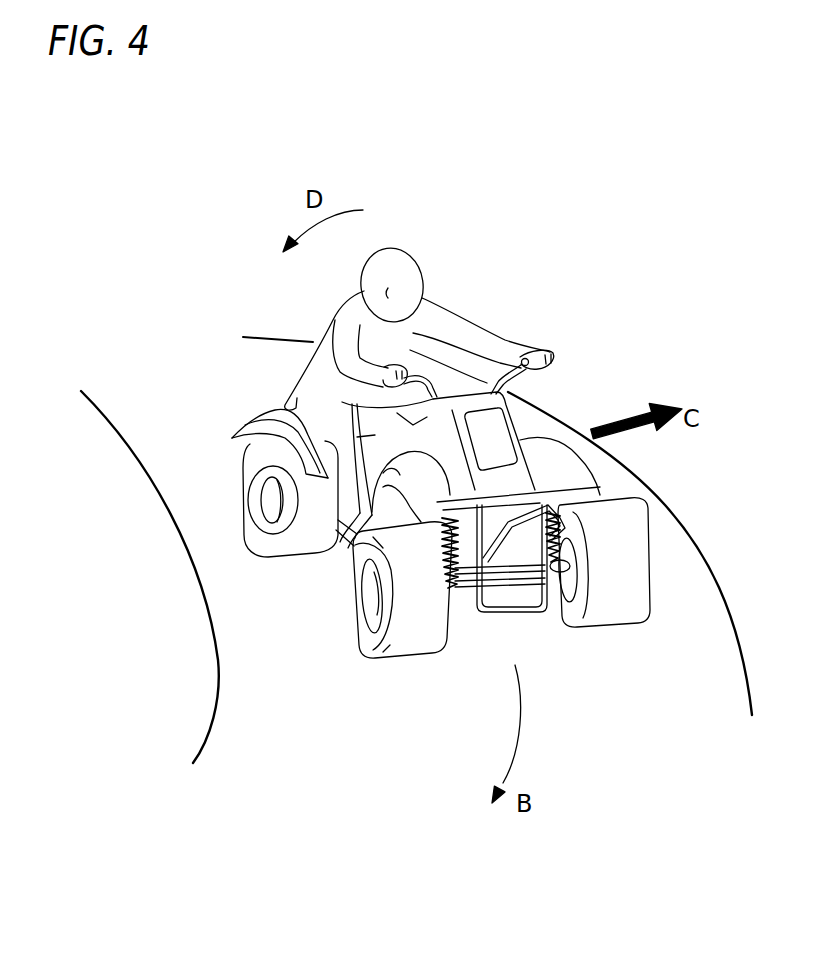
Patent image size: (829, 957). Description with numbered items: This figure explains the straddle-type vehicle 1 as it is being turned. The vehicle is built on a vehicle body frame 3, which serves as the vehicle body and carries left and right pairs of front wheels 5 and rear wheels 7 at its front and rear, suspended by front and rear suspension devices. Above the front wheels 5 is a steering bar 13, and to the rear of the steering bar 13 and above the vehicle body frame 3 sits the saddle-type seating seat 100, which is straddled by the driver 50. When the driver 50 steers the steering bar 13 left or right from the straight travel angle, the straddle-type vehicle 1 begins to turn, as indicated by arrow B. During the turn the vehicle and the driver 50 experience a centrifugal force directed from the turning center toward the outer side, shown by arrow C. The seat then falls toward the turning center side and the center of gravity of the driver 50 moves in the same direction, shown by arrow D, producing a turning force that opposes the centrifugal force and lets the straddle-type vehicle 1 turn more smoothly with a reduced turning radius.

The straddle-type vehicle 1 is at (593, 400).
The vehicle body frame 3 is at (598, 474).
The front wheels 5 is at (408, 656).
The rear wheels 7 is at (283, 556).
The steering bar 13 is at (508, 379).
The driver 50 is at (412, 251).
The saddle-type seating seat 100 is at (280, 410).